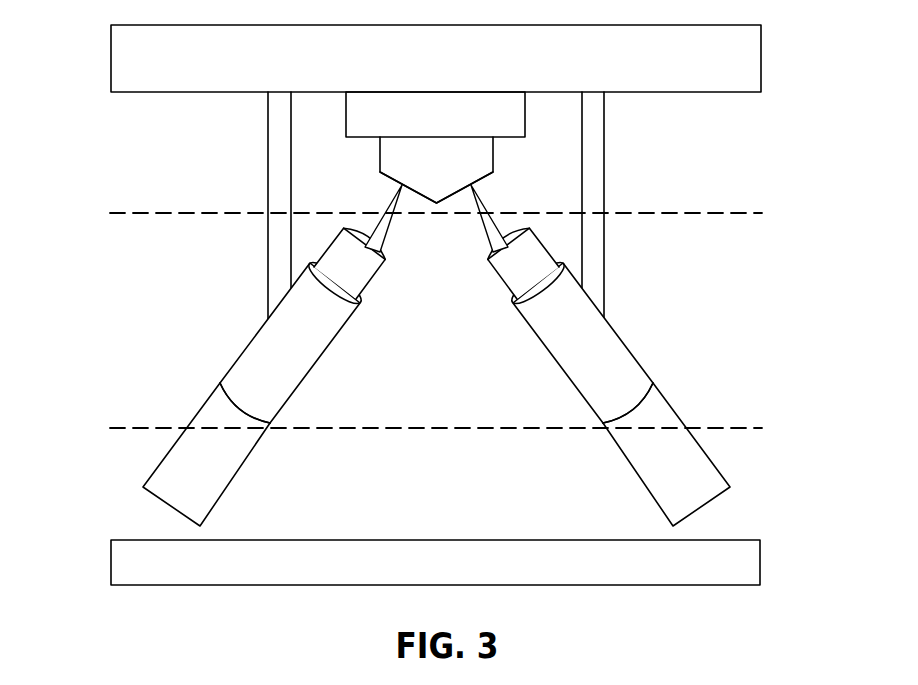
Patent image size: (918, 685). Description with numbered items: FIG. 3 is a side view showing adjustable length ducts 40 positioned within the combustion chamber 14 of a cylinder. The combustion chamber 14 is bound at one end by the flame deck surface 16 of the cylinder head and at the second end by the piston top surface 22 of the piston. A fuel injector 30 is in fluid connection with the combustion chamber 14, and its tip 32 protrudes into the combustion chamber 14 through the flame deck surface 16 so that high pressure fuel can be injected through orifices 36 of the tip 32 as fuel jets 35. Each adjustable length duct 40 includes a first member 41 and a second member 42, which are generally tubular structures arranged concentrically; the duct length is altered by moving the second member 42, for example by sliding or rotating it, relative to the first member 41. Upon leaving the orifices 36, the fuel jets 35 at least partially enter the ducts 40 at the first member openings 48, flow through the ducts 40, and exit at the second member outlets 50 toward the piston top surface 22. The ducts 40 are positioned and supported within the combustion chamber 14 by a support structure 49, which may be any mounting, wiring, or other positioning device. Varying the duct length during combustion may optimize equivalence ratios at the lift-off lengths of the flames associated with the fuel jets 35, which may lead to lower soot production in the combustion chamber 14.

The combustion chamber 14 is at (130, 160).
The flame deck surface 16 is at (647, 92).
The piston top surface 22 is at (423, 540).
The fuel injector 30 is at (425, 113).
The tip 32 is at (437, 160).
The orifices 36 is at (406, 186).
The adjustable length ducts 40 is at (726, 292).
The first member 41 is at (343, 257).
The second member 42 is at (302, 338).
The first member openings 48 is at (378, 252).
The support structure 49 is at (268, 182).
The second member outlets 50 is at (242, 411).
The fuel jets 35 is at (194, 490).